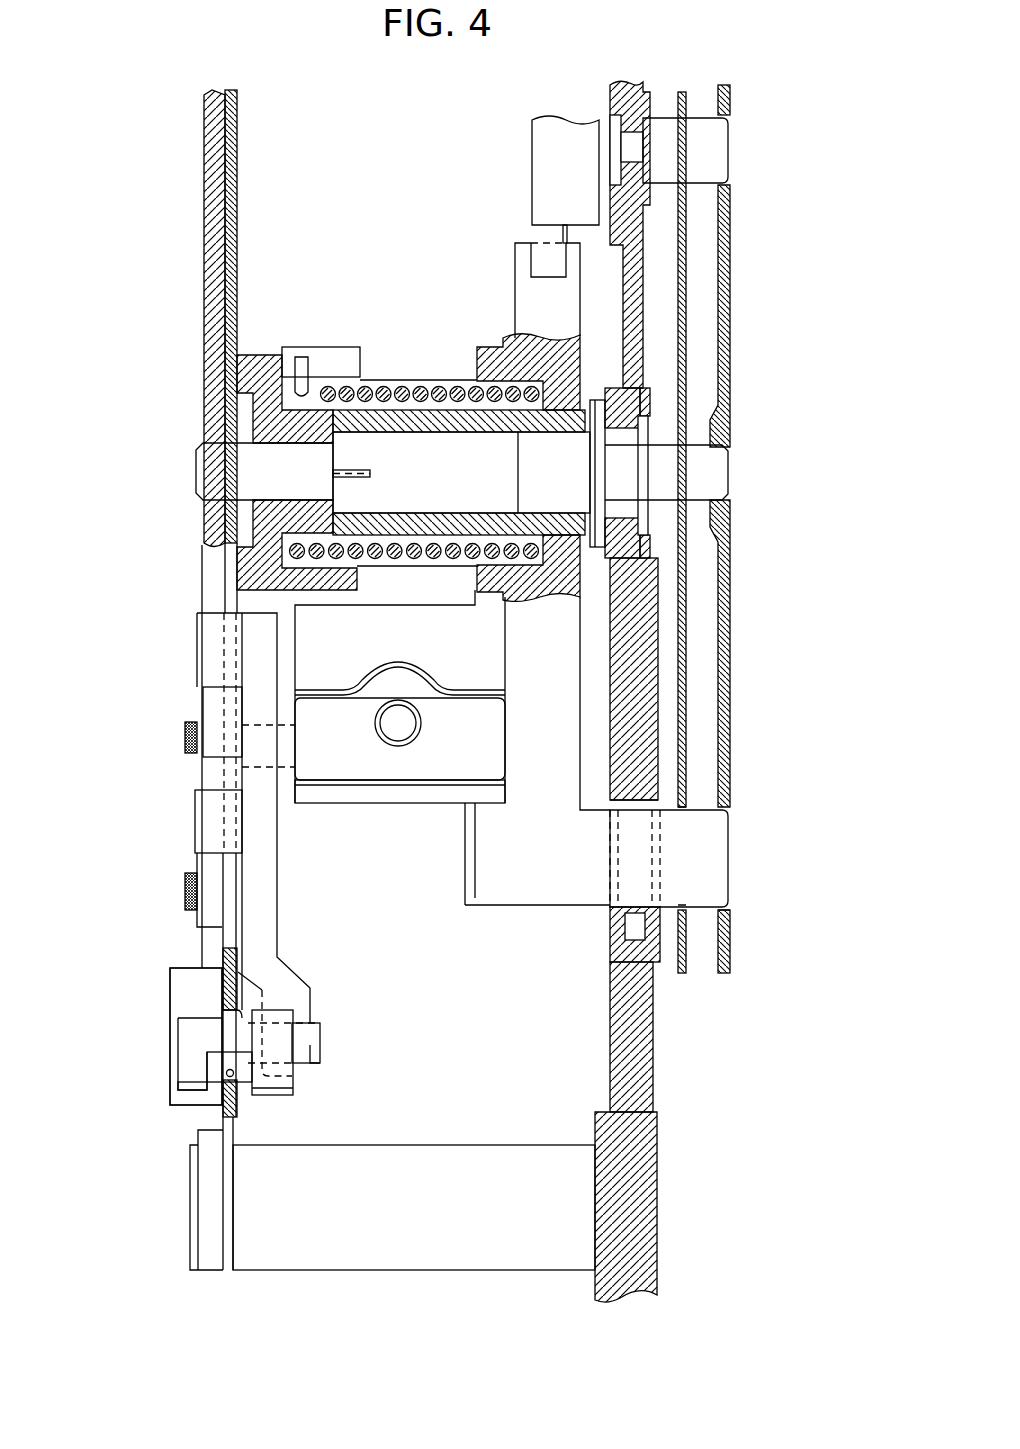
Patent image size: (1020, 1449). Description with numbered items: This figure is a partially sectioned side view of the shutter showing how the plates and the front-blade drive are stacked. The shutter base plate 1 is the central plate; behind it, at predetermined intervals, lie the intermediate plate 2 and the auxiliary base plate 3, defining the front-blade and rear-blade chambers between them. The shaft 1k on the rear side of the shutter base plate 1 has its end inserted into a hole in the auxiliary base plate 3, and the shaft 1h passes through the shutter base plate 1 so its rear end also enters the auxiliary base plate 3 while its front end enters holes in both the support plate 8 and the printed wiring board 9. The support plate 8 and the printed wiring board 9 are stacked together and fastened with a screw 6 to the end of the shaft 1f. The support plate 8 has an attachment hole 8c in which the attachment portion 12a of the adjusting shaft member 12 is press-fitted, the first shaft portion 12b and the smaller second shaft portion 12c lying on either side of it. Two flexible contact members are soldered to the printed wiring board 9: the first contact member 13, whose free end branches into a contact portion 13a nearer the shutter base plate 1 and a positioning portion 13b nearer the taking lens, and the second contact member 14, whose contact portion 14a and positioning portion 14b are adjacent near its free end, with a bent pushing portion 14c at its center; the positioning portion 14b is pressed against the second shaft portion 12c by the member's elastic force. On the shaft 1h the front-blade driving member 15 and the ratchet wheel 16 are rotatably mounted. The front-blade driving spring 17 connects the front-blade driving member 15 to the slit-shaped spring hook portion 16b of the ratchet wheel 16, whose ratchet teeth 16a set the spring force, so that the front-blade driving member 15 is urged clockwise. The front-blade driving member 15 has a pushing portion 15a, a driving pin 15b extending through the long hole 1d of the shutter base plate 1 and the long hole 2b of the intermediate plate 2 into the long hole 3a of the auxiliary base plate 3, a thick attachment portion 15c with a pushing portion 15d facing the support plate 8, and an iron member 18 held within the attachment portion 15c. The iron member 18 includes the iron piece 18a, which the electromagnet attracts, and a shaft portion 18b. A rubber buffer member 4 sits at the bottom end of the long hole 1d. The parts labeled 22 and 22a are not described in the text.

The shutter base plate 1 is at (637, 1170).
The long hole 1d is at (645, 790).
The shaft 1f is at (510, 1160).
The shaft 1h is at (222, 466).
The shaft 1k is at (718, 148).
The intermediate plate 2 is at (684, 955).
The long hole 2b is at (688, 900).
The auxiliary base plate 3 is at (725, 935).
The long hole 3a is at (725, 908).
The buffer member 4 is at (612, 930).
The screw 6 is at (195, 1197).
The support plate 8 is at (240, 118).
The attachment hole 8c is at (237, 1083).
The printed wiring board 9 is at (215, 143).
The adjusting shaft member 12 is at (165, 962).
The attachment portion 12a is at (235, 1060).
The first shaft portion 12b is at (190, 990).
The second shaft portion 12c is at (320, 1058).
The first contact member 13 is at (245, 825).
The contact portion 13a is at (275, 1040).
The positioning portion 13b is at (190, 1060).
The second contact member 14 is at (250, 655).
The contact portion 14a is at (295, 1065).
The positioning portion 14b is at (300, 1040).
The pushing portion 14c is at (247, 757).
The front-blade driving member 15 is at (425, 405).
The pushing portion 15a is at (523, 268).
The driving pin 15b is at (705, 848).
The attachment portion 15c is at (345, 675).
The pushing portion 15d is at (282, 770).
The ratchet wheel 16 is at (250, 370).
The ratchet teeth 16a is at (247, 593).
The spring hook portion 16b is at (328, 355).
The front-blade driving spring 17 is at (395, 385).
The iron member 18 is at (400, 772).
The iron piece 18a is at (478, 775).
The shaft portion 18b is at (410, 735).
The actuator 22 is at (545, 135).
The actuator tip 22a is at (548, 240).